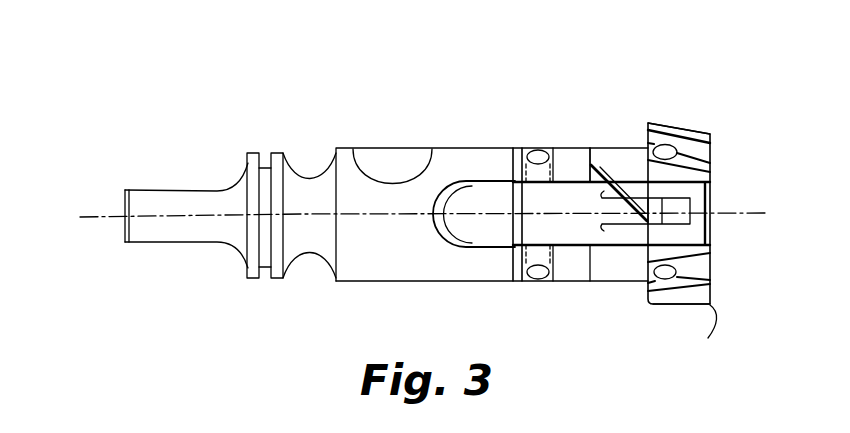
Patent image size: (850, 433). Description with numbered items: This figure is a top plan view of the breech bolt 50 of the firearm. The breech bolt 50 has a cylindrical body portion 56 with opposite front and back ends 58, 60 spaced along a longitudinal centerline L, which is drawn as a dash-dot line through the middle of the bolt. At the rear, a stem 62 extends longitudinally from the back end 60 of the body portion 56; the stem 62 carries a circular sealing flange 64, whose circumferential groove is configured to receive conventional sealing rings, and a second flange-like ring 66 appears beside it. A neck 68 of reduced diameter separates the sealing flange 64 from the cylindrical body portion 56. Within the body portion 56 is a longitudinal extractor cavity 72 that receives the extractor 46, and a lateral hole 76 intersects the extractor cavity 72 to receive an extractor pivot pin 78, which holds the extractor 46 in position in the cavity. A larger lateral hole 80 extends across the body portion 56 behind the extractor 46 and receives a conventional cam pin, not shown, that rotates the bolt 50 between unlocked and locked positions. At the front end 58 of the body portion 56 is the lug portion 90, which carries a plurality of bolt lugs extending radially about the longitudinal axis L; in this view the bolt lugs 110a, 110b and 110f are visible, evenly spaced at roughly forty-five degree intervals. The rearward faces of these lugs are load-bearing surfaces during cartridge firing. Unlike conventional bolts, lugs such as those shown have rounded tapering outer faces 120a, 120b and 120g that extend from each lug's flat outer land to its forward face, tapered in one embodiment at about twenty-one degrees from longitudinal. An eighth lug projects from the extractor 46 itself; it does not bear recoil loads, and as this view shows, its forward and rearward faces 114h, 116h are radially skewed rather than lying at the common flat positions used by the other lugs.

The longitudinal centerline L is at (92, 216).
The extractor 46 is at (580, 248).
The breech bolt 50 is at (513, 147).
The cylindrical body portion 56 is at (472, 281).
The front end 58 is at (710, 227).
The back end 60 is at (123, 241).
The stem 62 is at (176, 243).
The circular sealing flange 64 is at (248, 278).
The second flange 66 is at (265, 278).
The neck 68 is at (307, 176).
The extractor cavity 72 is at (621, 235).
The lateral hole 76 is at (537, 150).
The extractor pivot pin 78 is at (537, 279).
The larger lateral hole 80 is at (376, 150).
The lug portion 90 is at (680, 123).
The bolt lug 110a is at (646, 152).
The bolt lug 110b is at (648, 125).
The bolt lug 110f is at (648, 298).
The forward face of eighth lug 114h is at (590, 165).
The rearward face of eighth lug 116h is at (698, 206).
The rounded tapering outer face 120a is at (711, 147).
The rounded tapering outer face 120b is at (700, 128).
The rounded tapering outer face 120g is at (710, 278).